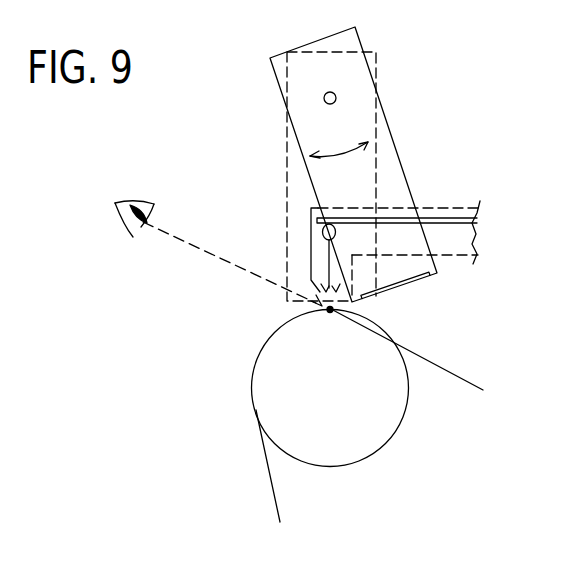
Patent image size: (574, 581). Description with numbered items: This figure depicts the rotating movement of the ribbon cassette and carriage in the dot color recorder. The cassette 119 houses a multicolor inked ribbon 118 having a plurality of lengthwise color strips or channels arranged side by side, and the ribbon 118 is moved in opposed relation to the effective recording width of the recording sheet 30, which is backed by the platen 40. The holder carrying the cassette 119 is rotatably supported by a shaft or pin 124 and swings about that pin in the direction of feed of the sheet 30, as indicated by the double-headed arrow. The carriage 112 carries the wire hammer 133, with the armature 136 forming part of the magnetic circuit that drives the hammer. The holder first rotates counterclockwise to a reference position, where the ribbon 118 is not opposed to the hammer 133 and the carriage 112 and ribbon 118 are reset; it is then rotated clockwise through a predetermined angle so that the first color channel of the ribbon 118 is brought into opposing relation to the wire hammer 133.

The recording sheet 30 is at (267, 460).
The platen 40 is at (383, 423).
The carriage 112 is at (457, 235).
The multicolor inked ribbon 118 is at (395, 292).
The cassette 119 is at (393, 166).
The shaft or pin 124 is at (337, 98).
The wire hammer 133 is at (311, 257).
The armature 136 is at (452, 218).